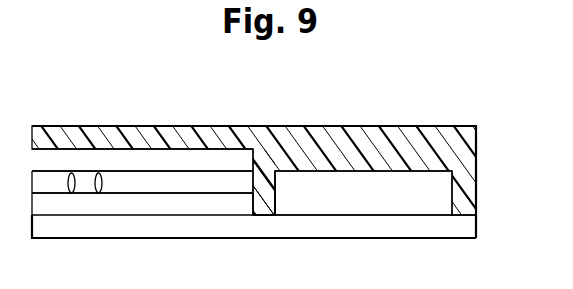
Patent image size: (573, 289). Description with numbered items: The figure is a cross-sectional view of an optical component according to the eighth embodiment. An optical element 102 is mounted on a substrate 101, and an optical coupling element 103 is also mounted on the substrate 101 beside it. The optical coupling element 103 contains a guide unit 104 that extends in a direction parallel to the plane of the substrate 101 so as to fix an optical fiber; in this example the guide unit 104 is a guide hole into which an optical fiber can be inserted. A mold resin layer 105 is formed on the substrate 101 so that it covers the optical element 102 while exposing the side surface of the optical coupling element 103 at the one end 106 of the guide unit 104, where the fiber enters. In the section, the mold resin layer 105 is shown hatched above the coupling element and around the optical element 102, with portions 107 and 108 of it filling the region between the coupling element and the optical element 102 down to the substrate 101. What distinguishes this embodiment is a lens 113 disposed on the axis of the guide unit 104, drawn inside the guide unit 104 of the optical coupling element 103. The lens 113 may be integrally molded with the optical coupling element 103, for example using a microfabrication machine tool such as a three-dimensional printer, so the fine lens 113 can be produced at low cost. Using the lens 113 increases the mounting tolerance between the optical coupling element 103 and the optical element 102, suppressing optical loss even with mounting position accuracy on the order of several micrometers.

The substrate 101 is at (476, 225).
The optical element 102 is at (363, 179).
The optical coupling element 103 is at (148, 155).
The guide unit 104 is at (217, 178).
The mold resin layer 105 is at (476, 148).
The one end of the guide unit 106 is at (32, 183).
The partition wall 107 is at (270, 179).
The wall base 108 is at (262, 215).
The lens 113 is at (98, 173).